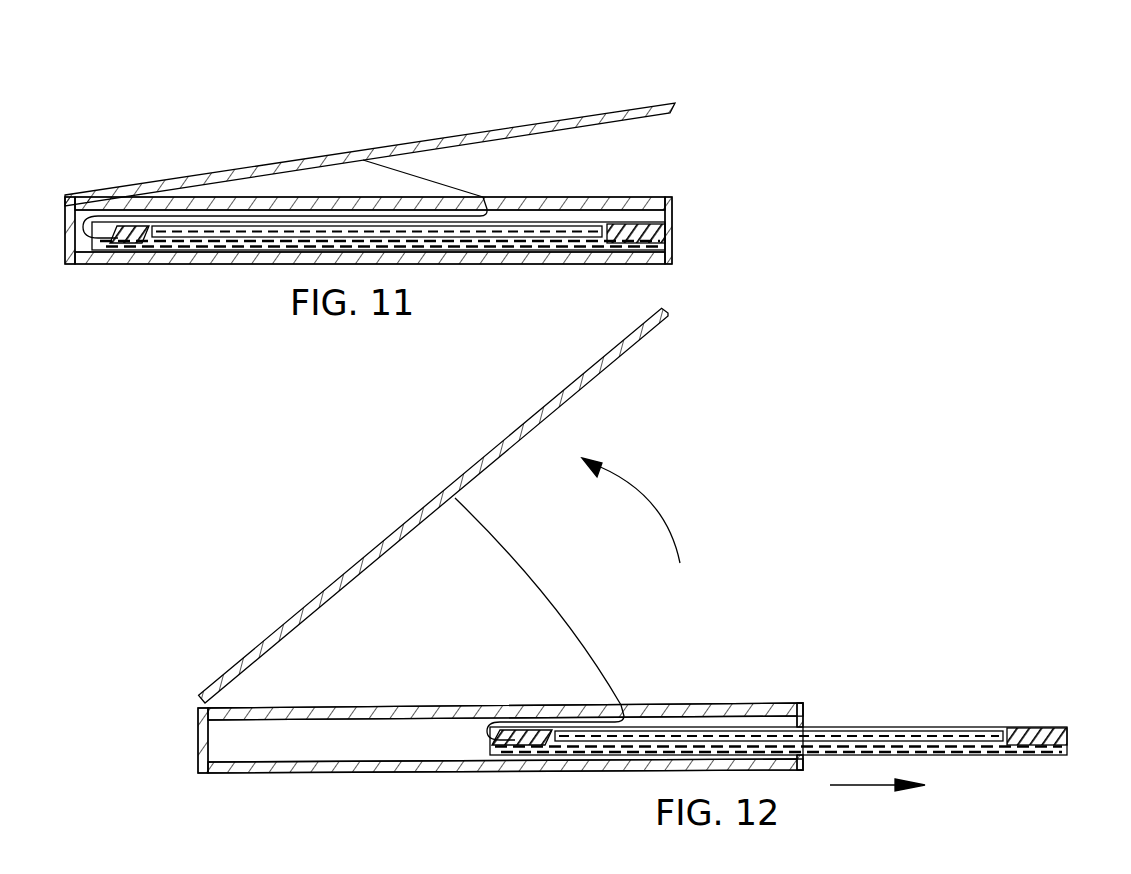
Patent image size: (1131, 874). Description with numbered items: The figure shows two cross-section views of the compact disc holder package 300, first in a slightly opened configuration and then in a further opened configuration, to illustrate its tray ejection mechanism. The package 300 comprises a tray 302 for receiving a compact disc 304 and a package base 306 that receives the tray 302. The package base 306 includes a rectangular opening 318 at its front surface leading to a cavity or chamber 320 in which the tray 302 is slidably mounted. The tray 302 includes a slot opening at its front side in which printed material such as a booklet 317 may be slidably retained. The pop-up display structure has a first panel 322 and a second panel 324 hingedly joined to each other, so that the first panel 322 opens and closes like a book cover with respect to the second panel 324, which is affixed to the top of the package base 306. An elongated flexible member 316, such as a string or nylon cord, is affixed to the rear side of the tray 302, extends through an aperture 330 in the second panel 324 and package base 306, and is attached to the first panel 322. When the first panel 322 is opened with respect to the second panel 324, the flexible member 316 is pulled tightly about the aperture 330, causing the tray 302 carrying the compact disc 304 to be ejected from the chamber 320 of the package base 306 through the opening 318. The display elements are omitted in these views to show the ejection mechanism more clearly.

In FIG. 11, the compact disc holder package 300 is at (285, 348).
In FIG. 12, the compact disc holder package 300 is at (403, 805).
In FIG. 11, the tray 302 is at (497, 248).
In FIG. 12, the tray 302 is at (1007, 753).
In FIG. 11, the compact disc 304 is at (377, 231).
In FIG. 12, the compact disc 304 is at (957, 735).
In FIG. 11, the package base 306 is at (176, 258).
In FIG. 12, the package base 306 is at (267, 765).
In FIG. 11, the elongated flexible member 316 is at (403, 172).
In FIG. 12, the elongated flexible member 316 is at (532, 580).
In FIG. 11, the booklet 317 is at (662, 242).
In FIG. 12, the booklet 317 is at (1045, 737).
In FIG. 11, the rectangular opening 318 is at (672, 220).
In FIG. 12, the rectangular opening 318 is at (805, 720).
In FIG. 11, the cavity or chamber 320 is at (575, 217).
In FIG. 12, the cavity or chamber 320 is at (227, 735).
In FIG. 11, the first panel 322 is at (633, 103).
In FIG. 12, the first panel 322 is at (670, 316).
In FIG. 11, the second panel 324 is at (263, 197).
In FIG. 12, the second panel 324 is at (505, 711).
In FIG. 11, the aperture 330 is at (487, 197).
In FIG. 12, the aperture 330 is at (628, 707).